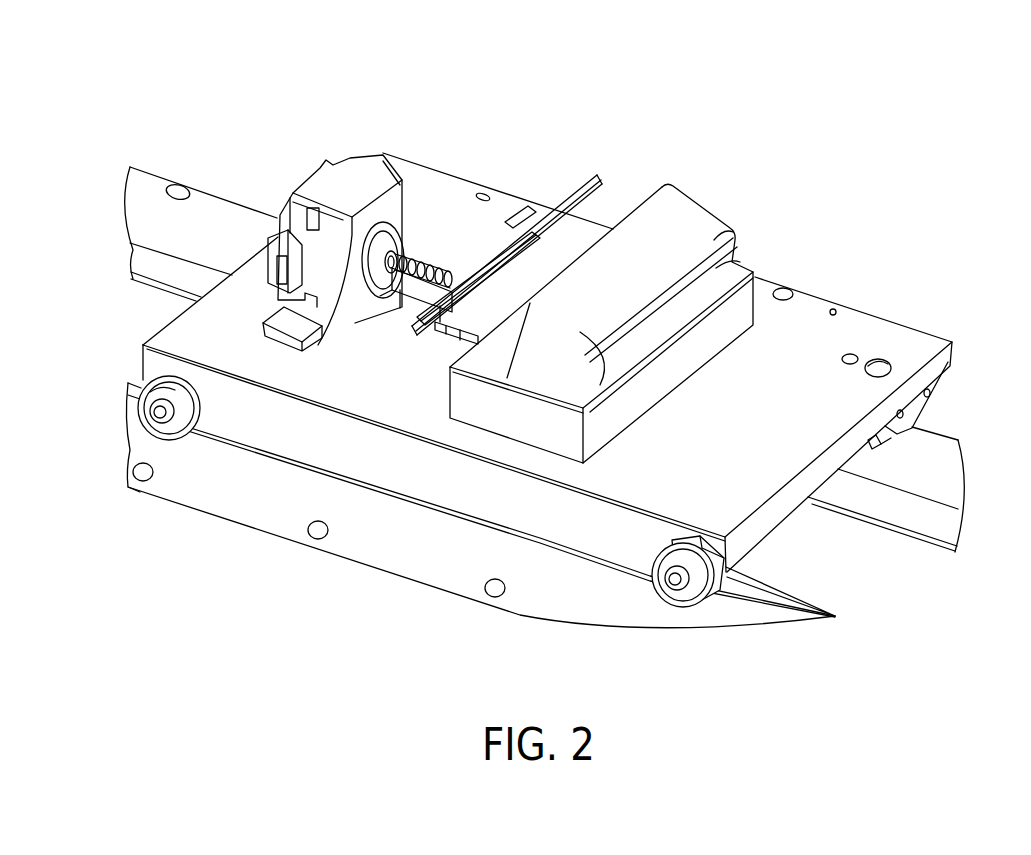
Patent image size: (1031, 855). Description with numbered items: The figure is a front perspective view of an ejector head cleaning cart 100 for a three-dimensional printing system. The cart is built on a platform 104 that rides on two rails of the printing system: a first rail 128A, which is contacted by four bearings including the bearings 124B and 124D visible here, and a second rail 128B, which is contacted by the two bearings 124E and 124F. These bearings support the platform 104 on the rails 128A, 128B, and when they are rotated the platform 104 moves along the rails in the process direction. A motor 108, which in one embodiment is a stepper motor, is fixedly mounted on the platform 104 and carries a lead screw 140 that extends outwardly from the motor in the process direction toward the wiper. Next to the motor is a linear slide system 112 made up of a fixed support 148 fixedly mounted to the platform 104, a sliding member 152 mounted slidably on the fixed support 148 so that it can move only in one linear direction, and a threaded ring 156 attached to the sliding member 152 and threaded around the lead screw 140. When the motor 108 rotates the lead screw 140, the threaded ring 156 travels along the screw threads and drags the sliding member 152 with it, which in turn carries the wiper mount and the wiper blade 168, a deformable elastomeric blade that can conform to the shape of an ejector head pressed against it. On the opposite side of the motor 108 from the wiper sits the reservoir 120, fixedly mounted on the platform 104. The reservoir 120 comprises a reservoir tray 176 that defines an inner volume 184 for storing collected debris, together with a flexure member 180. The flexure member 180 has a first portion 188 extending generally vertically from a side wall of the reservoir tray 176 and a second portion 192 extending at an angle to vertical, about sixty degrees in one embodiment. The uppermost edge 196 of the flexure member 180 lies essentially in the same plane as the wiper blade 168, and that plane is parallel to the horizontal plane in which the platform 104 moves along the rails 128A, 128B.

The ejector head cleaning cart 100 is at (192, 112).
The platform 104 is at (543, 521).
The motor 108 is at (333, 182).
The linear slide system 112 is at (395, 345).
The reservoir 120 is at (680, 432).
The bearing 124B is at (938, 398).
The bearing 124D is at (886, 443).
The bearing 124E is at (150, 420).
The bearing 124F is at (698, 606).
The first rail 128A is at (148, 222).
The second rail 128B is at (262, 518).
The lead screw 140 is at (463, 252).
The fixed support 148 is at (458, 344).
The sliding member 152 is at (482, 257).
The threaded ring 156 is at (410, 236).
The wiper blade 168 is at (582, 172).
The reservoir tray 176 is at (698, 350).
The flexure member 180 is at (630, 294).
The inner volume 184 is at (570, 362).
The first portion 188 is at (720, 272).
The second portion 192 is at (716, 238).
The uppermost edge 196 is at (648, 190).